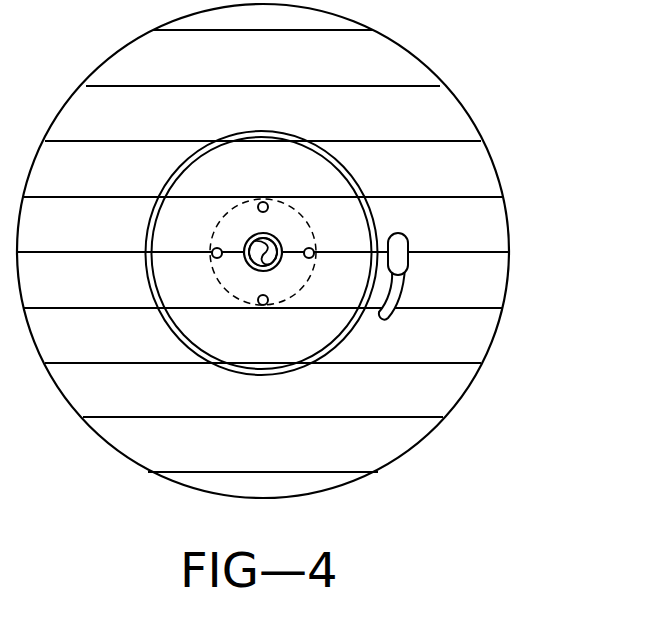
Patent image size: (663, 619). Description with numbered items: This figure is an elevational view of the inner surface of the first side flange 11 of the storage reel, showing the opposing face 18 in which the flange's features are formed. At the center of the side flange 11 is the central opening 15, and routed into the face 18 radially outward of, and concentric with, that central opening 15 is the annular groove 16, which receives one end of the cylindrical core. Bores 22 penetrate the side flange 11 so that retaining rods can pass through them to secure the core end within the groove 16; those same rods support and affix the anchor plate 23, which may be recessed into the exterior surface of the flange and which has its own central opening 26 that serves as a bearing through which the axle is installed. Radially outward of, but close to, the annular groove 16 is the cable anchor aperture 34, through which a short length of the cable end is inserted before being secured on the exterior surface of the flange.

The first side flange 11 is at (490, 153).
The opposing face 18 is at (392, 80).
The annular groove 16 is at (175, 333).
The central opening 15 is at (276, 248).
The anchor plate 23 is at (305, 212).
The bores 22 is at (258, 303).
The central opening of anchor plate 26 is at (250, 246).
The cable anchor aperture 34 is at (388, 318).